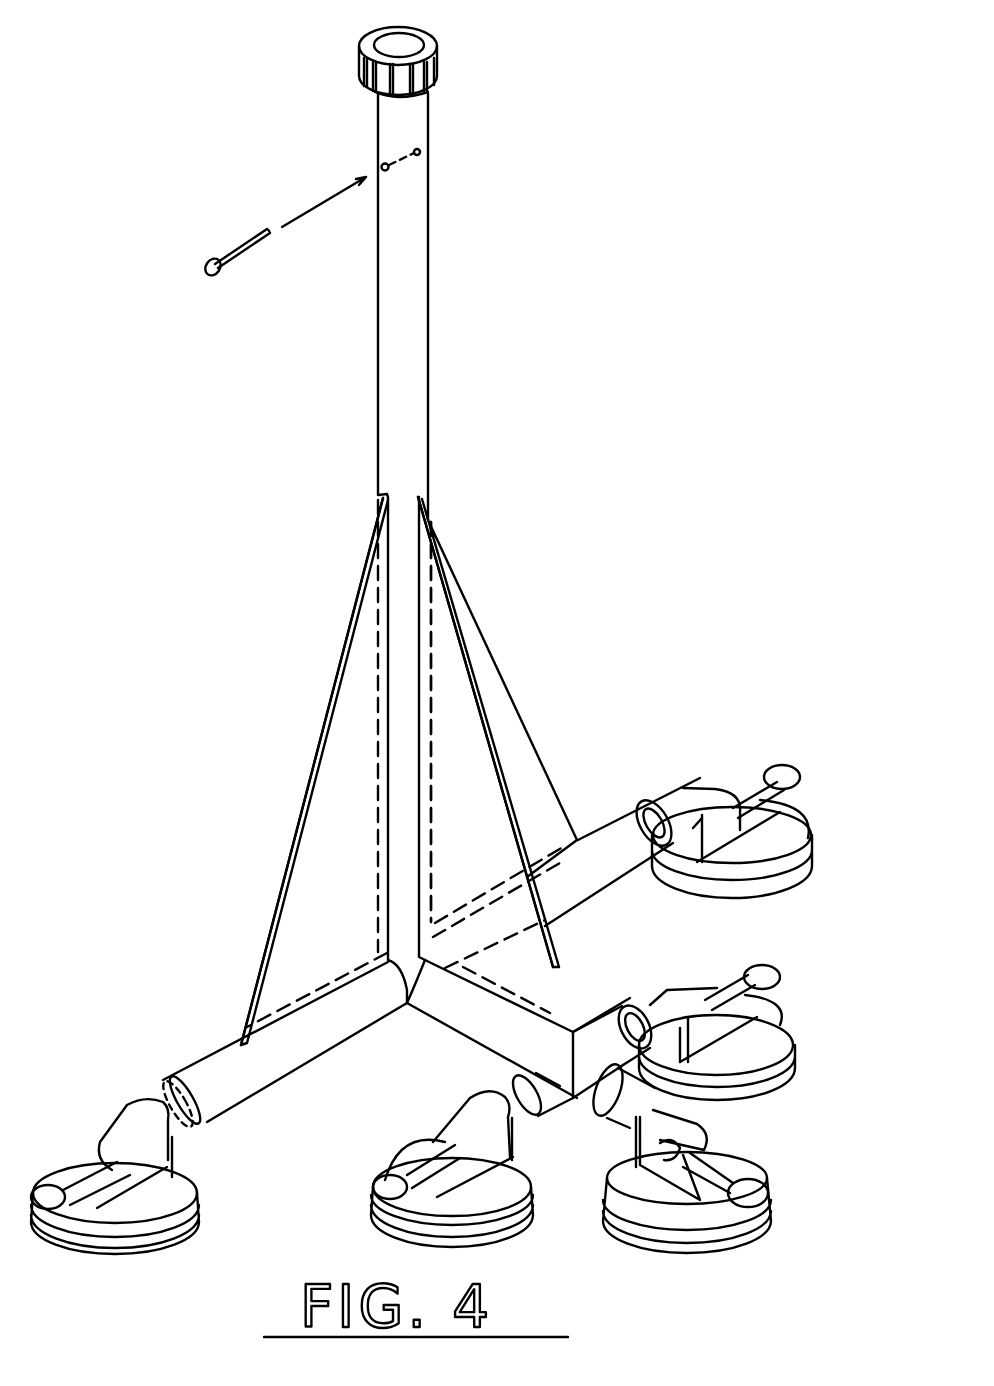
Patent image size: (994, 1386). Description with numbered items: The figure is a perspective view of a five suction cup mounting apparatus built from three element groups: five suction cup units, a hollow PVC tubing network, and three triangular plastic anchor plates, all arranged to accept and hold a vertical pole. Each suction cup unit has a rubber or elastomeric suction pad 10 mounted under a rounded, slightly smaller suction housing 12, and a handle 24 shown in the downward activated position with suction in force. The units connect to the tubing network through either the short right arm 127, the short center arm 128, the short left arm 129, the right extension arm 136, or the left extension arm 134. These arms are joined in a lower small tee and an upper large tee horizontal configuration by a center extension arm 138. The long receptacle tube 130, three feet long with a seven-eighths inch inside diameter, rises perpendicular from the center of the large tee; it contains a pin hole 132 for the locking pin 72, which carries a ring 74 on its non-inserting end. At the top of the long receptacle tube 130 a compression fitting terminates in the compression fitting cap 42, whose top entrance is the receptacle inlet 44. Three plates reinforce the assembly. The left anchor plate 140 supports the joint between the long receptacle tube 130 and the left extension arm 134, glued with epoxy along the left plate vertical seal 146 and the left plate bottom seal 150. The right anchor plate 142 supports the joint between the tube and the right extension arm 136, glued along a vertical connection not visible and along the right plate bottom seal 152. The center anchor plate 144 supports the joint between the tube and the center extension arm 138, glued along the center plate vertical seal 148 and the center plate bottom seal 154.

The suction pad 10 is at (808, 863).
The suction housing 12 is at (807, 833).
The handle 24 is at (778, 765).
The compression fitting cap 42 is at (360, 60).
The receptacle inlet 44 is at (392, 45).
The locking pin 72 is at (250, 243).
The ring 74 is at (215, 270).
The short right arm 127 is at (602, 1002).
The short center arm 128 is at (573, 1098).
The short left arm 129 is at (527, 1120).
The long receptacle tube 130 is at (431, 400).
The pin hole 132 is at (377, 168).
The left extension arm 134 is at (210, 1057).
The right extension arm 136 is at (598, 827).
The center extension arm 138 is at (473, 1040).
The left anchor plate 140 is at (303, 778).
The right anchor plate 142 is at (497, 673).
The center anchor plate 144 is at (507, 795).
The left plate vertical seal 146 is at (387, 635).
The center plate vertical seal 148 is at (431, 757).
The left plate bottom seal 150 is at (284, 1020).
The right plate bottom seal 152 is at (572, 878).
The center plate bottom seal 154 is at (430, 1015).